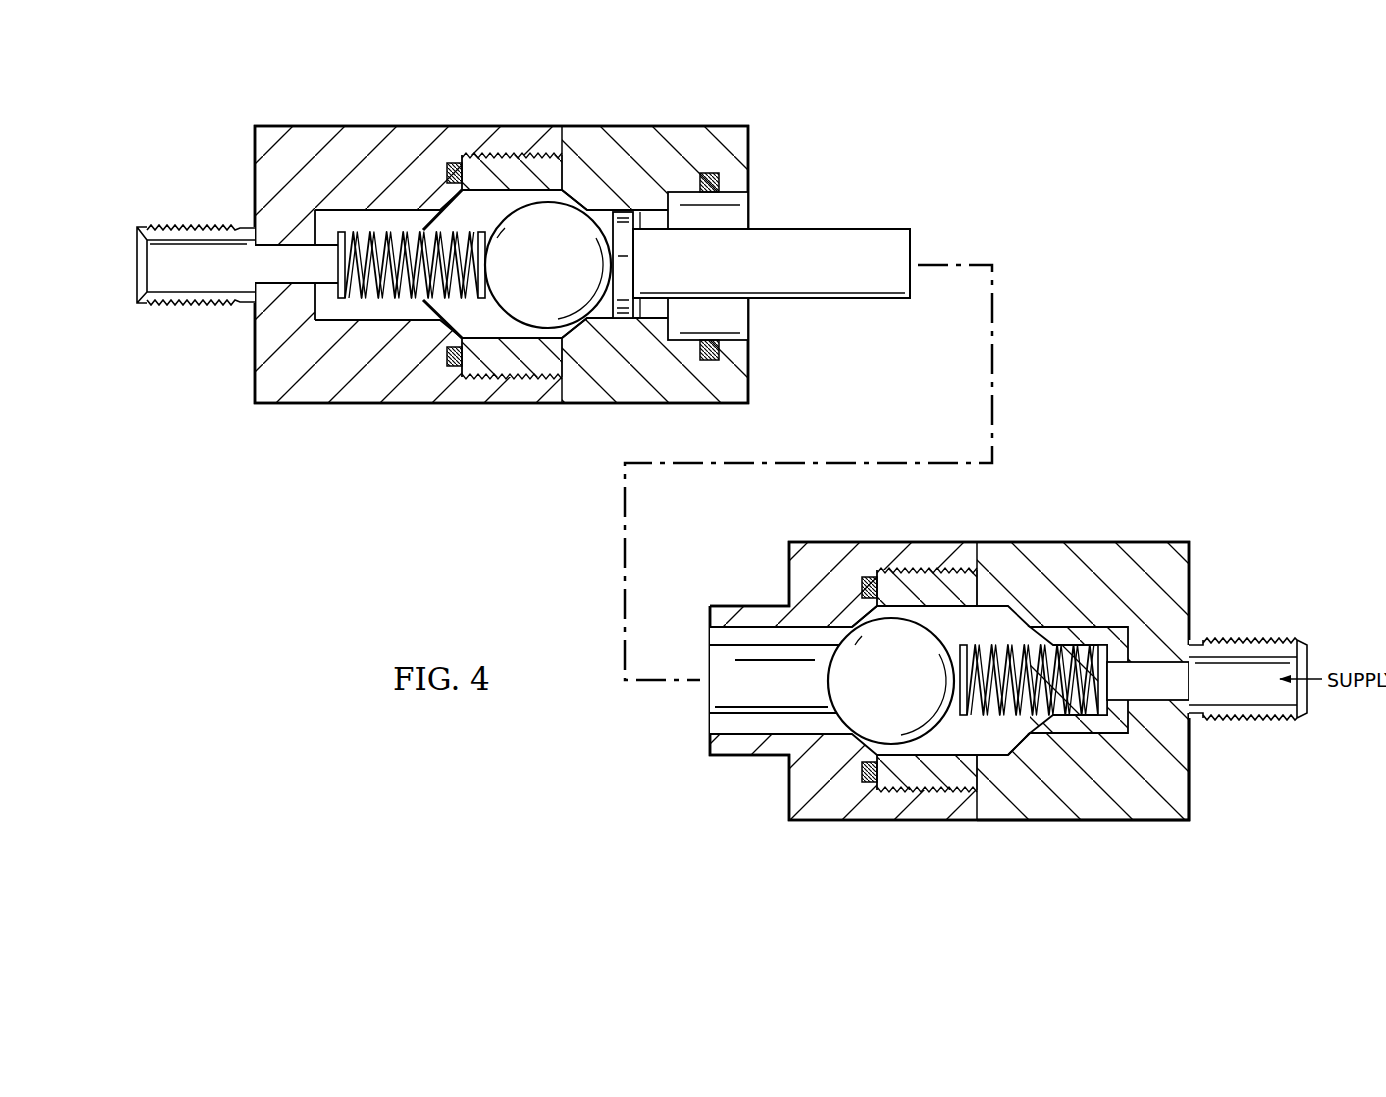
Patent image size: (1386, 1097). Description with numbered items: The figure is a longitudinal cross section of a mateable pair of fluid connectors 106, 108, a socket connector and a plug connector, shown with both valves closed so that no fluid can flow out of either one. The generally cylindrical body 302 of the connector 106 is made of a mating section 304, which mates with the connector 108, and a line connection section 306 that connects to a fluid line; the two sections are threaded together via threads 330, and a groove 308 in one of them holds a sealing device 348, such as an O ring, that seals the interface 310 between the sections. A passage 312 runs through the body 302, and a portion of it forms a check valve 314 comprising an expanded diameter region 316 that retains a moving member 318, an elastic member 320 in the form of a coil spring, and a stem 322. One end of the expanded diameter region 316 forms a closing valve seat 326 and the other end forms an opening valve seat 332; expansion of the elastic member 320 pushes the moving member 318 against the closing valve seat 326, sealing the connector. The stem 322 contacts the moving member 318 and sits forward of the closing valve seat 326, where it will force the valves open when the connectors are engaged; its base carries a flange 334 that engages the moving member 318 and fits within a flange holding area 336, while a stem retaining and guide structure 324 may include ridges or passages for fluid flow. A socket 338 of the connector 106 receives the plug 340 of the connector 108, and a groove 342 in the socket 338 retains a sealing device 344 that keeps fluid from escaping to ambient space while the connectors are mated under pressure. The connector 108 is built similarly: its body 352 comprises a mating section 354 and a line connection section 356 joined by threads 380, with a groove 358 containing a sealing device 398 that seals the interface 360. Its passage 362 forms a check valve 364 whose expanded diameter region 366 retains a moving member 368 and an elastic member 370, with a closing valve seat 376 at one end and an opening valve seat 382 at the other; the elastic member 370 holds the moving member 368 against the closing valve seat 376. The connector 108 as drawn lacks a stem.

The fluid connector 106 is at (311, 124).
The fluid connector 108 is at (1143, 541).
The body 302 is at (313, 420).
The mating section 304 is at (735, 128).
The line connection section 306 is at (360, 134).
The groove 308 is at (455, 366).
The interface 310 is at (566, 128).
The passage 312 is at (255, 255).
The check valve 314 is at (458, 314).
The expanded diameter region 316 is at (462, 212).
The moving member 318 is at (548, 265).
The elastic member 320 is at (336, 256).
The stem 322 is at (771, 263).
The stem retaining and guide structure 324 is at (654, 226).
The closing valve seat 326 is at (548, 187).
The threads 330 is at (490, 378).
The opening valve seat 332 is at (478, 150).
The flange 334 is at (612, 254).
The flange holding area 336 is at (598, 320).
The socket 338 is at (662, 335).
The groove 342 is at (705, 172).
The sealing device 344 is at (709, 360).
The sealing device 348 is at (447, 163).
The plug 340 is at (710, 748).
The body 352 is at (1210, 578).
The mating section 354 is at (932, 548).
The line connection section 356 is at (1185, 793).
The groove 358 is at (868, 577).
The interface 360 is at (863, 598).
The passage 362 is at (1185, 670).
The check valve 364 is at (1004, 634).
The expanded diameter region 366 is at (1018, 738).
The moving member 368 is at (891, 681).
The elastic member 370 is at (1110, 676).
The closing valve seat 376 is at (885, 792).
The threads 380 is at (958, 791).
The opening valve seat 382 is at (1037, 722).
The sealing device 398 is at (866, 782).